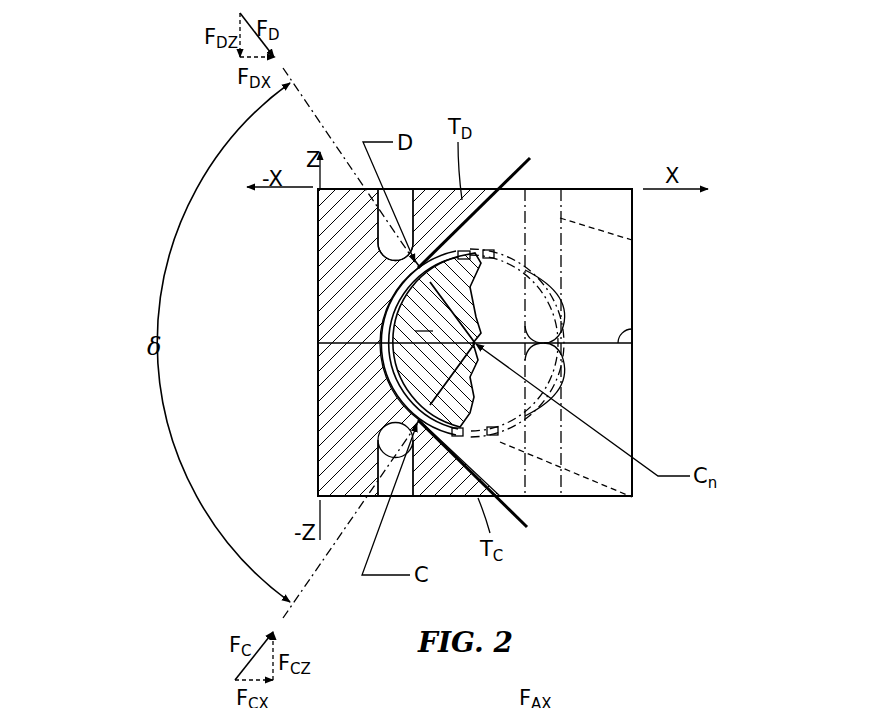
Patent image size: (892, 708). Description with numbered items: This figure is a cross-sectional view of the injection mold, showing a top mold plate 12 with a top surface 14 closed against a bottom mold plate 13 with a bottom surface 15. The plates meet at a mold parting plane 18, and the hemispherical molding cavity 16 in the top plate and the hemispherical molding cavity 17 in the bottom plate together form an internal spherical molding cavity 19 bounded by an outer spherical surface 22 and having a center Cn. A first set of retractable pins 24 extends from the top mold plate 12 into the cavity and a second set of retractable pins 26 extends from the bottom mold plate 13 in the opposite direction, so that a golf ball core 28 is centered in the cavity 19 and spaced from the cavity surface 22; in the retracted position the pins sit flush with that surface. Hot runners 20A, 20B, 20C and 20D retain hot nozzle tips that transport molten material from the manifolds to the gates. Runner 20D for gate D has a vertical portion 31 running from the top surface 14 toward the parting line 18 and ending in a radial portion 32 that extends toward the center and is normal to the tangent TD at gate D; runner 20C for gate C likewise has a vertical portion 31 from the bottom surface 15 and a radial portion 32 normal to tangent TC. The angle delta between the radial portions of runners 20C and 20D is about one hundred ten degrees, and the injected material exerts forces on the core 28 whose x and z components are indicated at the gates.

The top mold plate 12 is at (632, 203).
The bottom mold plate 13 is at (633, 423).
The top surface 14 is at (597, 189).
The bottom surface 15 is at (600, 497).
The hemispherical molding cavity 16 is at (563, 303).
The hemispherical molding cavity 17 is at (567, 383).
The mold parting plane 18 is at (632, 329).
The spherical molding cavity 19 is at (572, 330).
The hot runner 20A is at (632, 240).
The hot runner 20B is at (632, 497).
The hot runner 20C is at (443, 497).
The hot runner 20D is at (408, 205).
The outer spherical surface 22 is at (390, 372).
The first set of retractable pins 24 is at (493, 250).
The second set of retractable pins 26 is at (495, 437).
The golf ball core 28 is at (437, 340).
The vertical portion 31 is at (388, 250).
The radial portion 32 is at (397, 264).